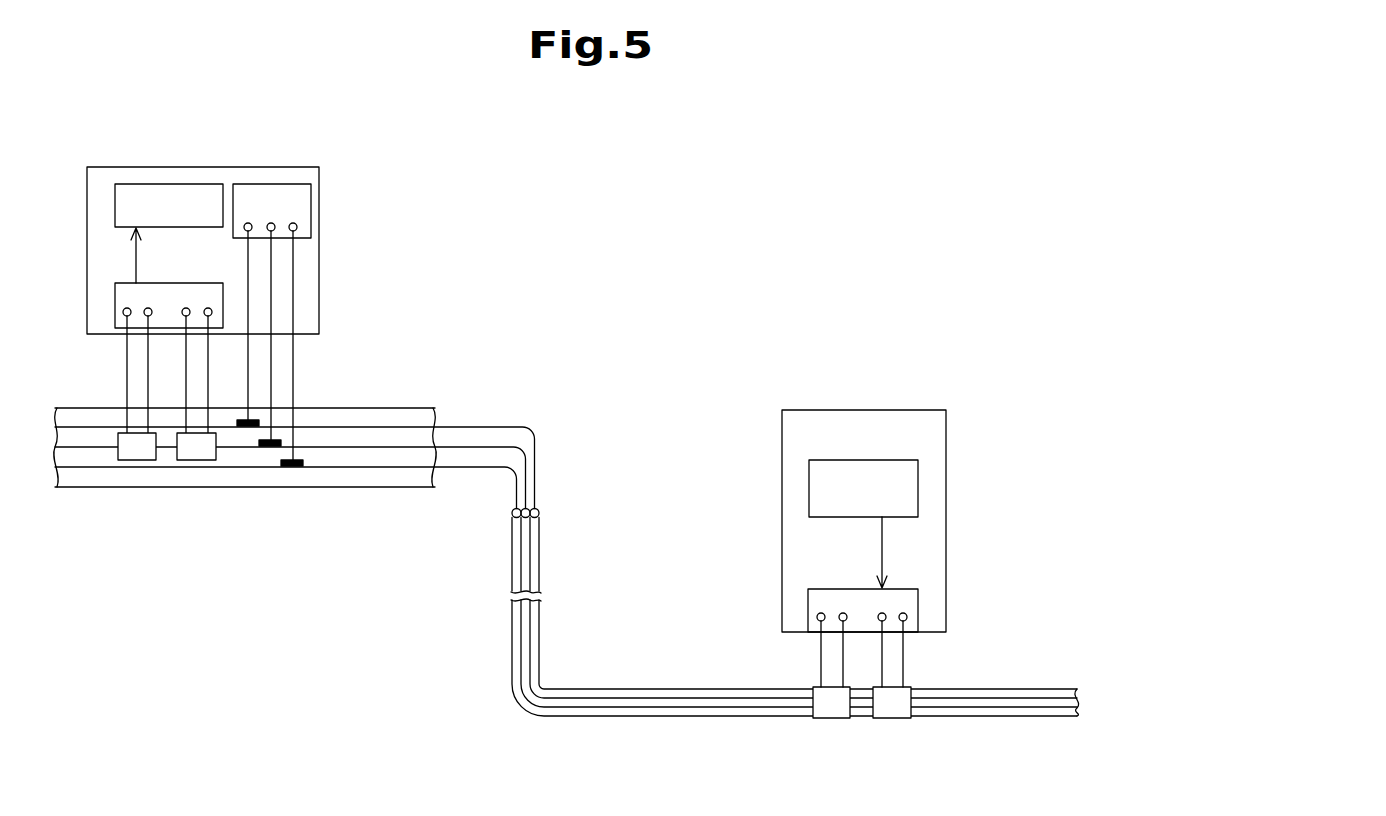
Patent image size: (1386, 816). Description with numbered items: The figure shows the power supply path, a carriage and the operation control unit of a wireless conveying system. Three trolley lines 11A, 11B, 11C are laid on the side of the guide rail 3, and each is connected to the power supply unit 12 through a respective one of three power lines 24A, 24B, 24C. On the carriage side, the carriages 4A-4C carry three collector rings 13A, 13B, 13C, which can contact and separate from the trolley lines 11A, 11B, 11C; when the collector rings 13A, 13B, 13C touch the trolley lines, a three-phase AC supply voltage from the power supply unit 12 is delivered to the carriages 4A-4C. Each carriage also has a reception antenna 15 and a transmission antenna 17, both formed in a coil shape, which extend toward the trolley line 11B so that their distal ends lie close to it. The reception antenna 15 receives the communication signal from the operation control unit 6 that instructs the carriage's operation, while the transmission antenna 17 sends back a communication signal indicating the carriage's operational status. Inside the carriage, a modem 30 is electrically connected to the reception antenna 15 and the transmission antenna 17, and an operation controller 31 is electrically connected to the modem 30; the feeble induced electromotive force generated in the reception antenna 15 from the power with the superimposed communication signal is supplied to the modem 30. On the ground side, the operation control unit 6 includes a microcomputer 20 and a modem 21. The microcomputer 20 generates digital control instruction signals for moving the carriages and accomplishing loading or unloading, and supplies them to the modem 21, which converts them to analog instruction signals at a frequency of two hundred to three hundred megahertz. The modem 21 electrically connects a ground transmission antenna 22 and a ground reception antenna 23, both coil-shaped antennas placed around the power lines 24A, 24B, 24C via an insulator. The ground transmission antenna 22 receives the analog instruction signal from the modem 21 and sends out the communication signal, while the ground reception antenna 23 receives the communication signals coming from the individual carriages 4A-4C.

The guide rail 3 is at (392, 407).
The carriages 4A-4C is at (347, 154).
The operation control unit 6 is at (864, 417).
The trolley line 11A is at (465, 425).
The trolley line 11B is at (502, 445).
The trolley line 11C is at (460, 472).
The power supply unit 12 is at (1245, 702).
The collector ring 13A is at (240, 427).
The collector ring 13B is at (270, 447).
The collector ring 13C is at (297, 467).
The reception antenna 15 is at (133, 455).
The transmission antenna 17 is at (190, 455).
The microcomputer 20 is at (877, 460).
The modem 21 is at (852, 593).
The ground transmission antenna 22 is at (833, 718).
The ground reception antenna 23 is at (892, 718).
The power line 24A is at (612, 690).
The power line 24B is at (682, 700).
The power line 24C is at (700, 717).
The modem 30 is at (170, 288).
The operation controller 31 is at (164, 182).